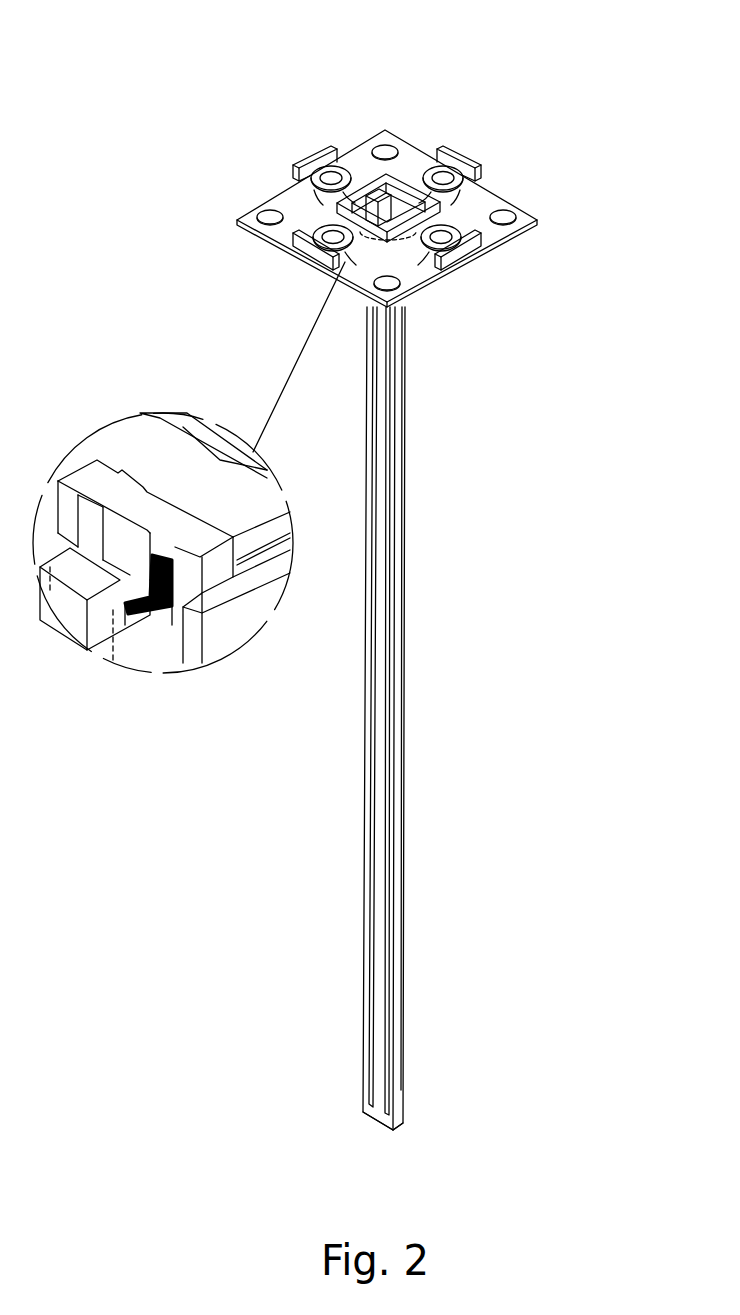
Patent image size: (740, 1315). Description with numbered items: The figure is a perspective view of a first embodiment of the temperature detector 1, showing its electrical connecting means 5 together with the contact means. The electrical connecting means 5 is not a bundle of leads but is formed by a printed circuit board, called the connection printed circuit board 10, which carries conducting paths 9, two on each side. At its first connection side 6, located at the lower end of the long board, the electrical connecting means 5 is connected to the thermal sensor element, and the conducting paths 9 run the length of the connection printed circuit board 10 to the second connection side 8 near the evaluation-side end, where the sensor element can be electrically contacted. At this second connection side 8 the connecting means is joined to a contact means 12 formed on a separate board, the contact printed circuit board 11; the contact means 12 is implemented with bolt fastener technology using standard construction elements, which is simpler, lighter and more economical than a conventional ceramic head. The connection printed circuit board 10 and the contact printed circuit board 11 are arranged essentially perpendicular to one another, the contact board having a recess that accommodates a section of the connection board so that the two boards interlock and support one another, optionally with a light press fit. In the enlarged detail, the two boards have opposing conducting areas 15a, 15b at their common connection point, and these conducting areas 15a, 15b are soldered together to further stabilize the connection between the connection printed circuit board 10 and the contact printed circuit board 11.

The temperature detector 1 is at (195, 275).
The electrical connecting means 5 is at (402, 612).
The first connection side 6 is at (365, 1112).
The second connection side 8 is at (393, 182).
The conducting paths 9 is at (373, 848).
The connection printed circuit board 10 is at (382, 507).
The contact printed circuit board 11 is at (483, 210).
The contact means 12 is at (320, 157).
The conducting area 15a is at (153, 538).
The conducting area 15b is at (127, 613).